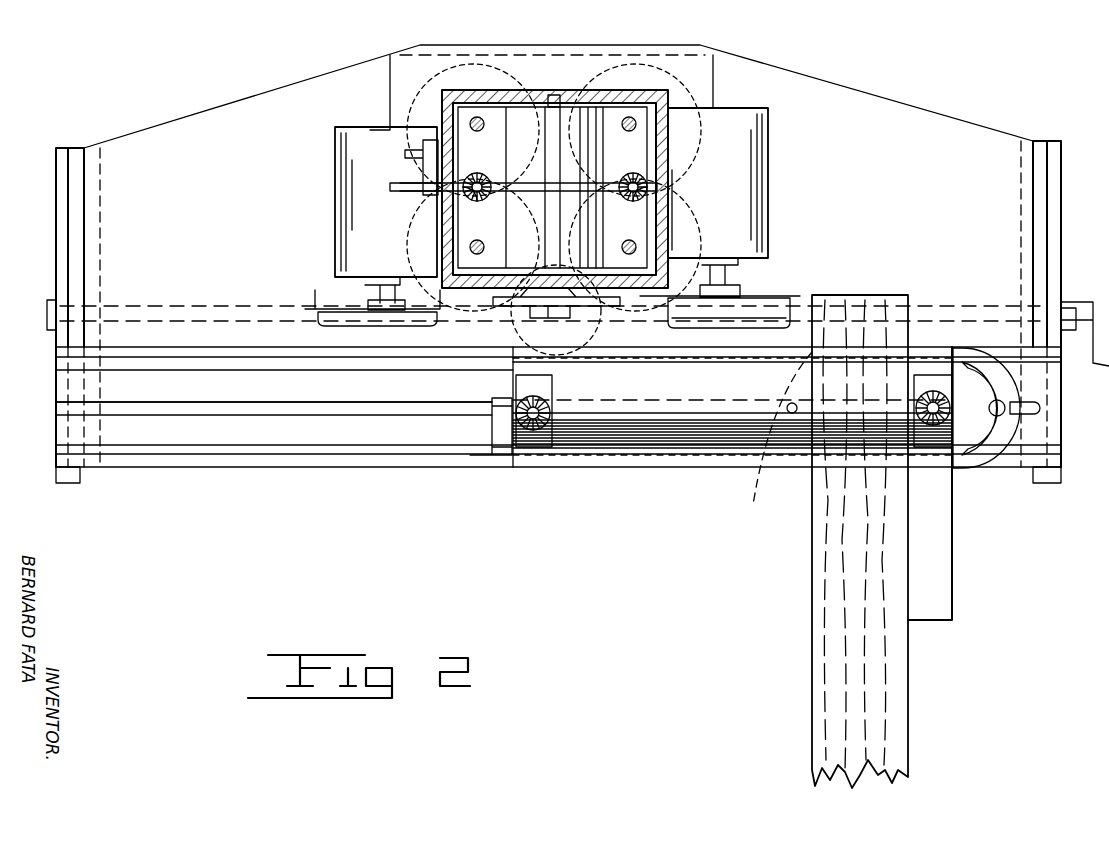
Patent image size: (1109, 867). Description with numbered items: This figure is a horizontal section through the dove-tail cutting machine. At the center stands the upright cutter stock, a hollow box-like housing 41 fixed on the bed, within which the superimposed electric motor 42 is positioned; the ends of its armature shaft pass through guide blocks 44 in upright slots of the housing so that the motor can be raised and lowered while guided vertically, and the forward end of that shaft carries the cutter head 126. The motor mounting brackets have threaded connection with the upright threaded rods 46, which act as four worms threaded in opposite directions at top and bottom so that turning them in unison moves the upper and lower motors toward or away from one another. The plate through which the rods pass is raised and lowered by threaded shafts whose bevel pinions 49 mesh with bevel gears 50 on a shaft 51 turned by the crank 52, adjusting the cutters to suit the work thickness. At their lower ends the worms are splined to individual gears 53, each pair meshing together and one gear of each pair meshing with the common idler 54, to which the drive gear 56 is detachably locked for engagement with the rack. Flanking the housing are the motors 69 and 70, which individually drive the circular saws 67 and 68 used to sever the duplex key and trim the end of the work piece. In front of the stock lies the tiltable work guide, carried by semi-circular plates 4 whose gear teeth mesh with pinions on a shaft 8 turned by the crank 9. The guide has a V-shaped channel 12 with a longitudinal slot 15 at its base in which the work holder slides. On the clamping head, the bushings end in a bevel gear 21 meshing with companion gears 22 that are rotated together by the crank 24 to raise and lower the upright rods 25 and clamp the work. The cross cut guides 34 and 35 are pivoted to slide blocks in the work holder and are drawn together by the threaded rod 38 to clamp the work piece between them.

The semi-circular plates 4 is at (58, 215).
The shaft 8 is at (130, 306).
The crank 9 is at (1085, 368).
The V-shaped channel 12 is at (358, 430).
The longitudinal slot 15 is at (246, 415).
The bevel gear 21 is at (515, 386).
The companion gears 22 is at (548, 396).
The crank 24 is at (492, 436).
The upright rods 25 is at (940, 430).
The cross cut guide 34 is at (753, 500).
The cross cut guide 35 is at (963, 470).
The threaded rod 38 is at (537, 430).
The housing 41 is at (455, 92).
The electric motor 42 is at (598, 120).
The guide blocks 44 is at (556, 103).
The upright threaded rods 46 is at (480, 124).
The bevel pinions 49 is at (492, 178).
The bevel gears 50 is at (471, 199).
The shaft 51 is at (560, 172).
The crank 52 is at (424, 188).
The gear 53 is at (398, 100).
The idler 54 is at (554, 192).
The drive gear 56 is at (512, 336).
The circular saw 67 is at (778, 297).
The circular saw 68 is at (318, 295).
The motor 69 is at (755, 180).
The motor 70 is at (338, 150).
The cutter head 126 is at (572, 305).